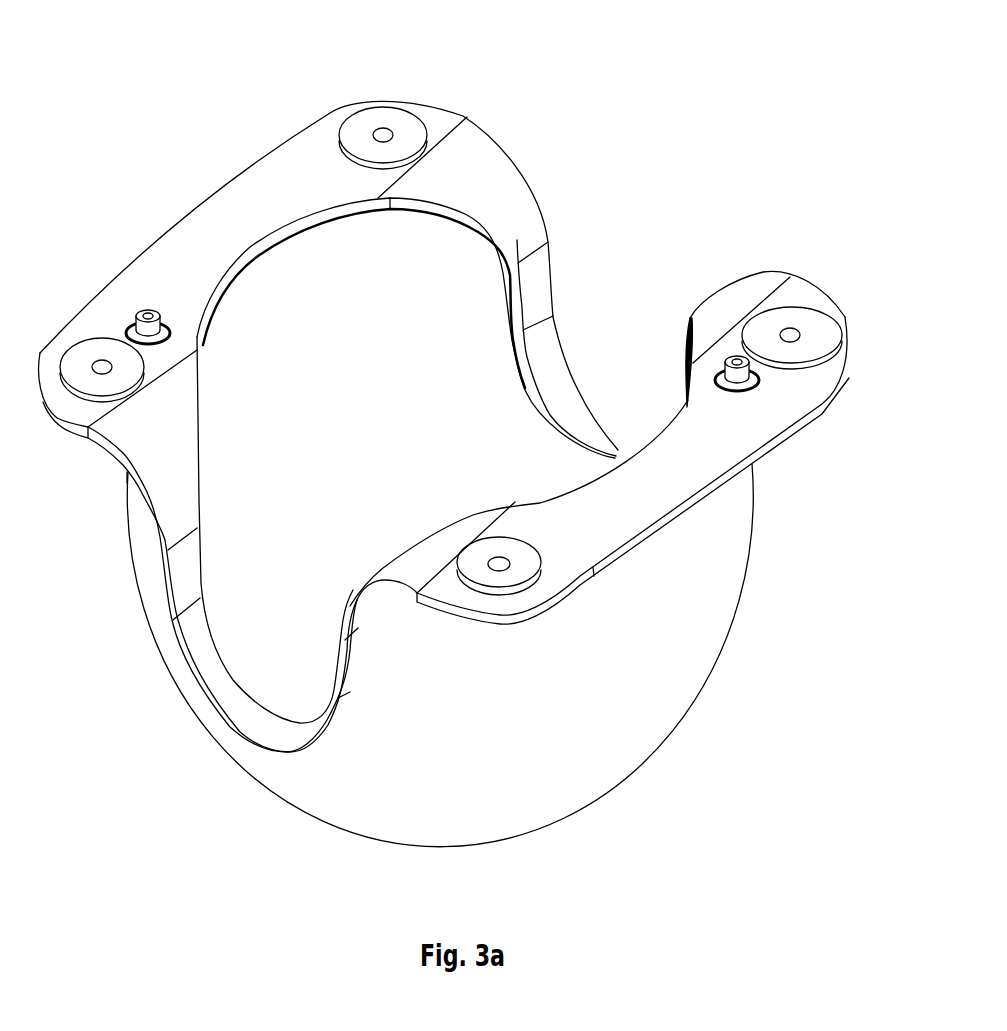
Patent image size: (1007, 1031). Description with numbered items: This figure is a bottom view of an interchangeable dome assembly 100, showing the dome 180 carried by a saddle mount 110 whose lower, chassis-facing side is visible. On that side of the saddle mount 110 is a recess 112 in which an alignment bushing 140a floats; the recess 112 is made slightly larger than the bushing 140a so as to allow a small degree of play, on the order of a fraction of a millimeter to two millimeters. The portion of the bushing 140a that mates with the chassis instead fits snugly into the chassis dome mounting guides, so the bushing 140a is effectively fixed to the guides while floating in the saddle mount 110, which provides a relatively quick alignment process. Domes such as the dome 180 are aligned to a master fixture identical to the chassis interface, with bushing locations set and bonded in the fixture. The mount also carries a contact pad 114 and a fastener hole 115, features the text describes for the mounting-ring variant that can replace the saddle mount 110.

The interchangeable dome assembly 100 is at (718, 78).
The saddle mount 110 is at (275, 157).
The recess 112 is at (167, 322).
The contact pad 114 is at (810, 337).
The fastener hole 115 is at (780, 330).
The alignment bushing 140a is at (130, 328).
The dome 180 is at (560, 733).